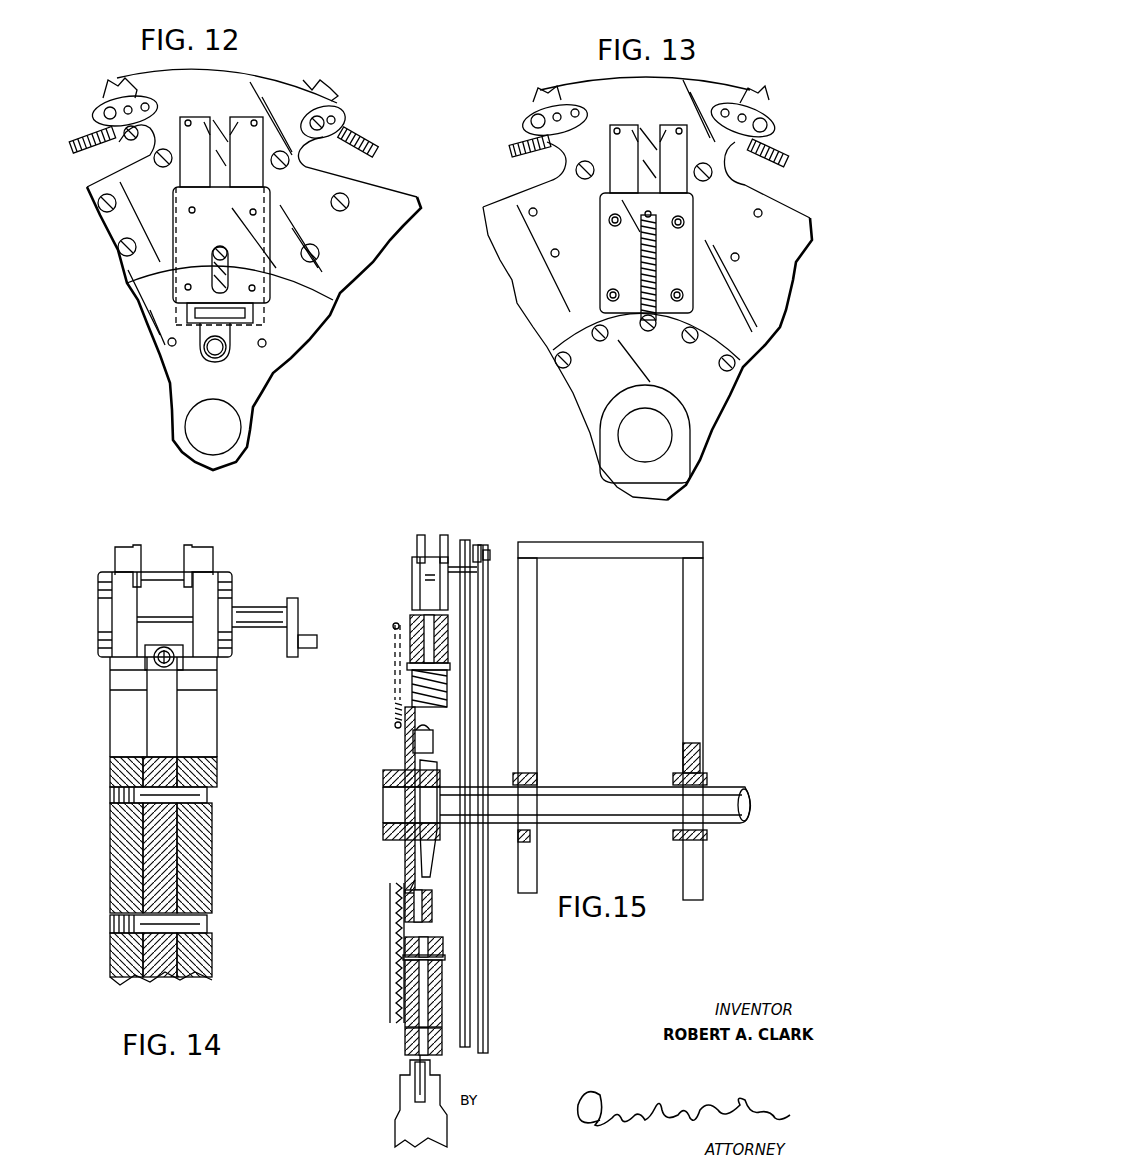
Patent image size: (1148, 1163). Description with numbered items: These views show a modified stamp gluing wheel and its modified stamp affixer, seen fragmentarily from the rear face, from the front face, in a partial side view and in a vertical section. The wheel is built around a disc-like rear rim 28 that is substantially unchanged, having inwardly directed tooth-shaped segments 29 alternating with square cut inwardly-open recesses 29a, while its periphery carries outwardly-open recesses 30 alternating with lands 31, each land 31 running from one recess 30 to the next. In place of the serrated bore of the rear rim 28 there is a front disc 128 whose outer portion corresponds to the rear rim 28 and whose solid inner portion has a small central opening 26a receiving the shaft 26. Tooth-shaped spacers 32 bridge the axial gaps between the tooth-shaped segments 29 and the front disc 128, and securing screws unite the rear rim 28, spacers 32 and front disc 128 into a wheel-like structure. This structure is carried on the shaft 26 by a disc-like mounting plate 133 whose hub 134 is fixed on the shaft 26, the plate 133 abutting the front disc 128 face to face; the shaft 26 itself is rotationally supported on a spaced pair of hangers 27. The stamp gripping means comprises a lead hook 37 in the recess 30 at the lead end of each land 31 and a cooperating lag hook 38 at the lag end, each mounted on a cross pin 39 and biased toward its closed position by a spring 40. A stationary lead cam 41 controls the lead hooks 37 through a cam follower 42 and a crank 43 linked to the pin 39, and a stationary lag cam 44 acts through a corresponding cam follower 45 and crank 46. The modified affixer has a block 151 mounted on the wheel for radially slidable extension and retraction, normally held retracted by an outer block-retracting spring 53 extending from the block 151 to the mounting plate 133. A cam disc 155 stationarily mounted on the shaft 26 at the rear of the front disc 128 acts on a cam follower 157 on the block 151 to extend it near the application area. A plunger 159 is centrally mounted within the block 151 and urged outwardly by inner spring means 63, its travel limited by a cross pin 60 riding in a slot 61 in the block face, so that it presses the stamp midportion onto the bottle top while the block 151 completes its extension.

In FIG. 15, the shaft 26 is at (748, 810).
In FIG. 12, the central opening 26a is at (213, 427).
In FIG. 13, the central opening 26a is at (645, 435).
In FIG. 15, the hangers 27 is at (690, 678).
In FIG. 12, the rear rim 28 is at (136, 272).
In FIG. 14, the rear rim 28 is at (205, 848).
In FIG. 15, the rear rim 28 is at (440, 1060).
In FIG. 12, the tooth-shaped segments 29 is at (343, 278).
In FIG. 12, the inwardly-open recesses 29a is at (250, 170).
In FIG. 12, the outwardly-open recesses 30 is at (358, 154).
In FIG. 12, the lands 31 is at (250, 72).
In FIG. 14, the spacers 32 is at (152, 978).
In FIG. 12, the lead hook 37 is at (113, 92).
In FIG. 13, the lead hook 37 is at (541, 95).
In FIG. 12, the lag hook 38 is at (323, 90).
In FIG. 13, the lag hook 38 is at (760, 100).
In FIG. 14, the lag hook 38 is at (188, 545).
In FIG. 15, the lag hook 38 is at (430, 572).
In FIG. 13, the cross pin 39 is at (530, 122).
In FIG. 14, the cross pin 39 is at (245, 603).
In FIG. 13, the spring 40 is at (514, 152).
In FIG. 14, the spring 40 is at (164, 671).
In FIG. 15, the lead cam 41 is at (463, 968).
In FIG. 12, the cam follower 42 is at (128, 145).
In FIG. 12, the crank 43 is at (139, 133).
In FIG. 15, the lag cam 44 is at (488, 1016).
In FIG. 12, the cam follower 45 is at (313, 110).
In FIG. 14, the cam follower 45 is at (318, 642).
In FIG. 15, the cam follower 45 is at (488, 545).
In FIG. 12, the crank 46 is at (338, 118).
In FIG. 14, the crank 46 is at (300, 622).
In FIG. 15, the crank 46 is at (475, 545).
In FIG. 13, the outer block-retracting spring 53 is at (640, 243).
In FIG. 15, the outer block-retracting spring 53 is at (400, 707).
In FIG. 12, the cross pin 60 is at (229, 253).
In FIG. 12, the slot 61 is at (227, 283).
In FIG. 15, the inner plunger-extending spring means 63 is at (410, 680).
In FIG. 12, the front disc 128 is at (161, 330).
In FIG. 13, the front disc 128 is at (550, 318).
In FIG. 14, the front disc 128 is at (120, 848).
In FIG. 15, the front disc 128 is at (405, 766).
In FIG. 13, the mounting plate 133 is at (590, 386).
In FIG. 15, the mounting plate 133 is at (409, 738).
In FIG. 13, the hub 134 is at (601, 436).
In FIG. 15, the hub 134 is at (386, 832).
In FIG. 12, the block 151 is at (221, 256).
In FIG. 13, the block 151 is at (646, 253).
In FIG. 15, the block 151 is at (402, 990).
In FIG. 15, the cam disc 155 is at (422, 795).
In FIG. 12, the cam follower 157 is at (207, 362).
In FIG. 15, the cam follower 157 is at (424, 733).
In FIG. 15, the plunger 159 is at (432, 926).